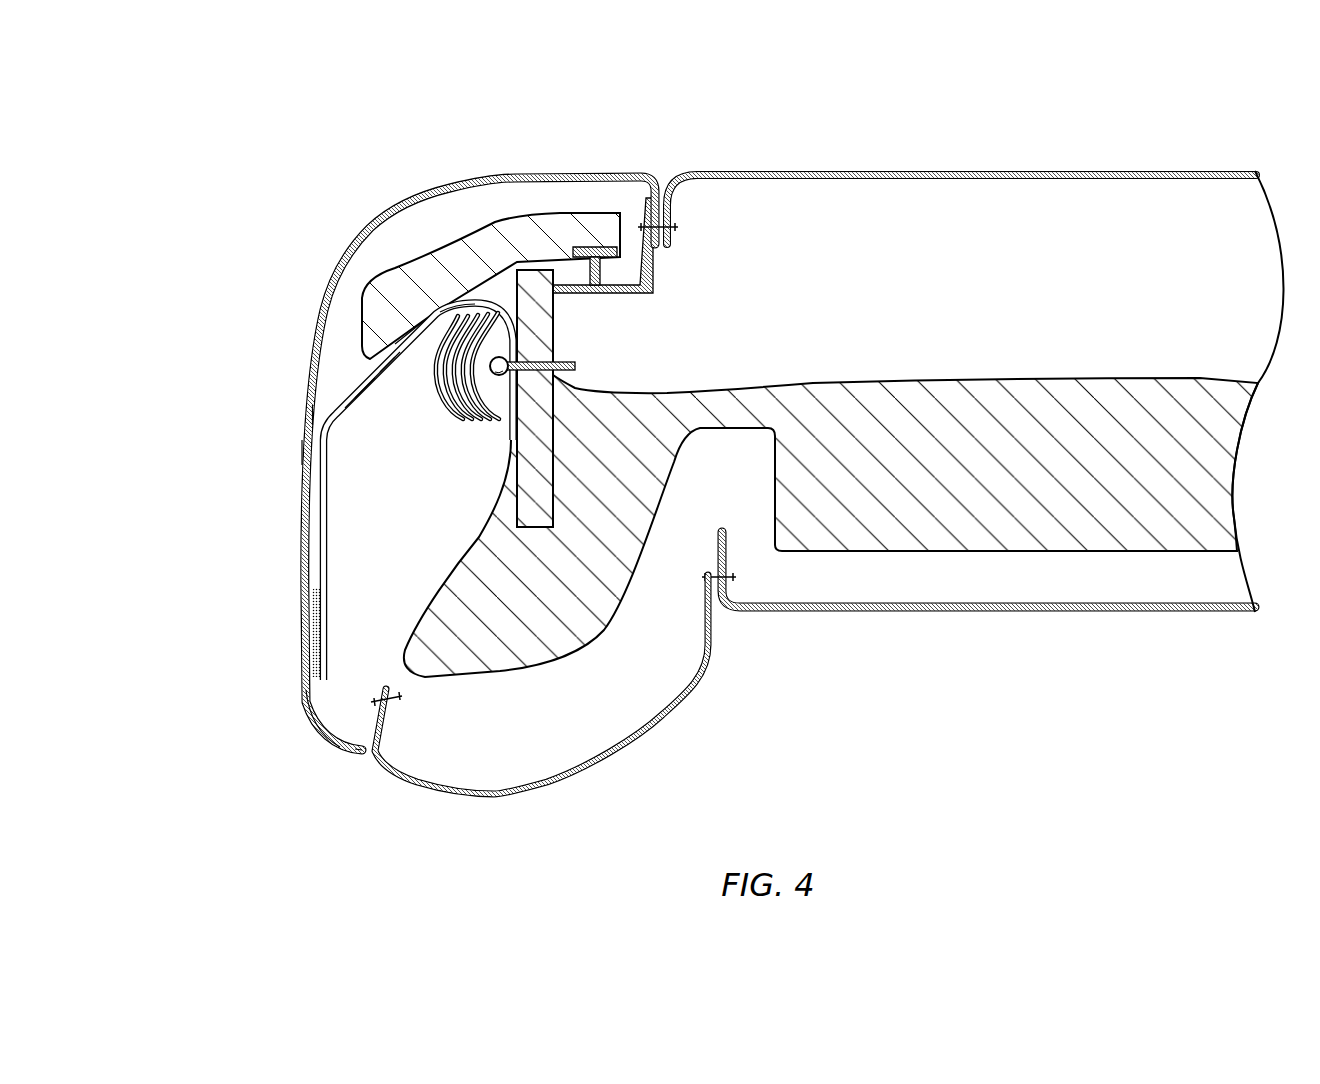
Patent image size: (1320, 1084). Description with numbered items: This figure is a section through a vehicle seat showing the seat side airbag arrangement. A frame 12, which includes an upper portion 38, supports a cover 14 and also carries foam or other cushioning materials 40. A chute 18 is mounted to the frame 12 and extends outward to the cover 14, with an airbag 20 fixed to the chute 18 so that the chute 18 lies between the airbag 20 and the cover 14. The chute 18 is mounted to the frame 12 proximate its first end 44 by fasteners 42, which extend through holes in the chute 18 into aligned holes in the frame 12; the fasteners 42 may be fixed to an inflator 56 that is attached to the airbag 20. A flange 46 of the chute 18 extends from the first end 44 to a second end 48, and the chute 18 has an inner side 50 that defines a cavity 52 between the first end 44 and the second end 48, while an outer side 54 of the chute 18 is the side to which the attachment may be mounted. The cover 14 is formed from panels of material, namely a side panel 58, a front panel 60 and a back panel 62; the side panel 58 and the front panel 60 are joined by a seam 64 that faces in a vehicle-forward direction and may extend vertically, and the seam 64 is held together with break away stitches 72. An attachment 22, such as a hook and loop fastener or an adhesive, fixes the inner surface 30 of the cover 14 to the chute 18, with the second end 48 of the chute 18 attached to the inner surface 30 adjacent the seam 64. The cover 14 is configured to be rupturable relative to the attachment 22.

The frame 12 is at (537, 258).
The cover 14 is at (728, 157).
The chute 18 is at (354, 370).
The airbag 20 is at (408, 362).
The attachment 22 is at (315, 594).
The inner surface 30 is at (325, 445).
The upper portion 38 is at (510, 290).
The cushioning materials 40 is at (578, 212).
The fasteners 42 is at (558, 370).
The first end 44 is at (511, 402).
The flange 46 is at (327, 412).
The second end 48 is at (316, 713).
The inner side 50 is at (355, 407).
The cavity 52 is at (422, 425).
The outer side 54 is at (455, 268).
The inflator 56 is at (450, 404).
The side panel 58 is at (302, 452).
The front panel 60 is at (706, 672).
The back panel 62 is at (886, 170).
The seam 64 is at (360, 761).
The break away stitches 72 is at (378, 690).